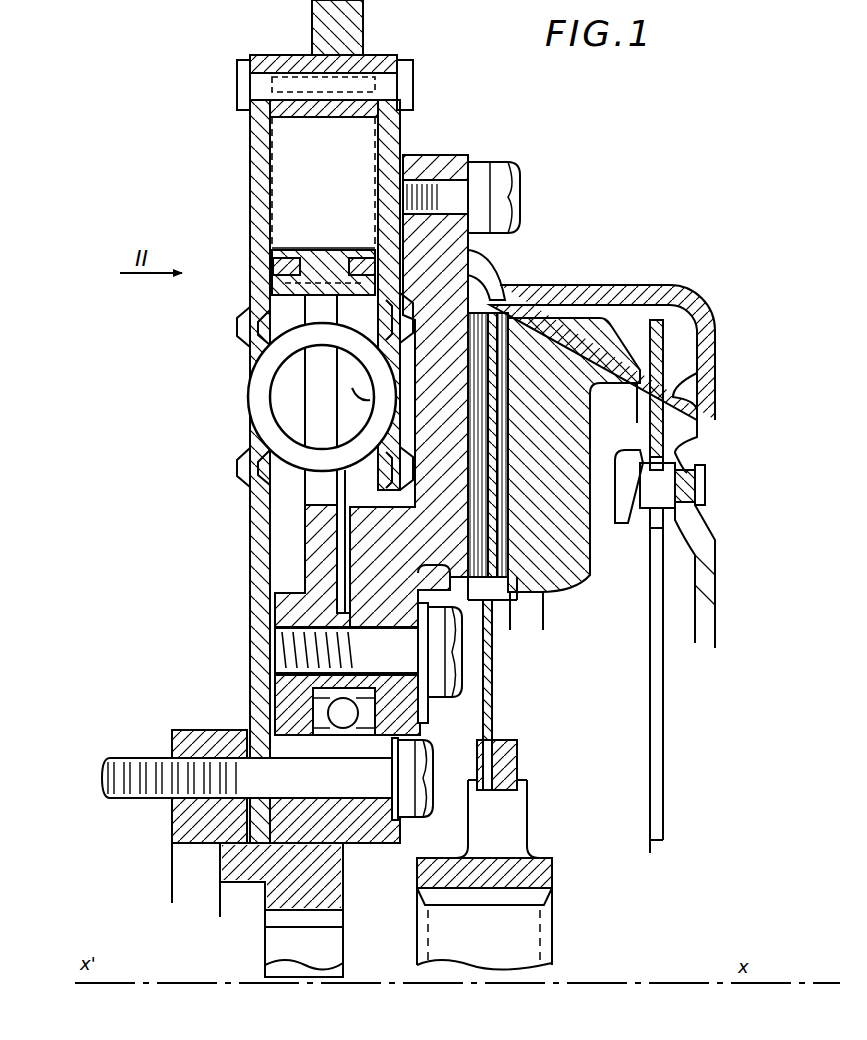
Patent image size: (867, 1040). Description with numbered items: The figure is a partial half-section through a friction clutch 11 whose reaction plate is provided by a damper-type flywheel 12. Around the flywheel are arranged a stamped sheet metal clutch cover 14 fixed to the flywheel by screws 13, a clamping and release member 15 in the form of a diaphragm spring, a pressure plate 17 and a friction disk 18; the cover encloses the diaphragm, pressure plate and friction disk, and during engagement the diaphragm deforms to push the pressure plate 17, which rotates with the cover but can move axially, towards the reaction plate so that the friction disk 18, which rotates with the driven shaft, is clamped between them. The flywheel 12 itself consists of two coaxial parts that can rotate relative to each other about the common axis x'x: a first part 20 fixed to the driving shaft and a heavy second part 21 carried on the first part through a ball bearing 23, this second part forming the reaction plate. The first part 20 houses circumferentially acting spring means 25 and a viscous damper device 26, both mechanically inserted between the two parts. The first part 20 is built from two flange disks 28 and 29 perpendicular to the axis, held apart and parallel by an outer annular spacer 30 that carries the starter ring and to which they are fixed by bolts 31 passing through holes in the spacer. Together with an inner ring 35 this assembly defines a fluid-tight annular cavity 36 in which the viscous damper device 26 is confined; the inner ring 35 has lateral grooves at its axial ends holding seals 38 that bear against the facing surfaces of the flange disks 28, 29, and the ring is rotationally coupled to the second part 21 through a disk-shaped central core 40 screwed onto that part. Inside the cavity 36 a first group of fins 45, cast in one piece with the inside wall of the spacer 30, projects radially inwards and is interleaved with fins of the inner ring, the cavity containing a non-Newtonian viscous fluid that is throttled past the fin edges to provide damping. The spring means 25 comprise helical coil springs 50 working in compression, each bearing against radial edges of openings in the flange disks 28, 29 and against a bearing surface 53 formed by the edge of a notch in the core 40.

The friction clutch 11 is at (627, 162).
The damper-type flywheel 12 is at (338, 565).
The screws 13 is at (518, 160).
The clutch cover 14 is at (632, 283).
The clamping and release member 15 is at (668, 725).
The pressure plate 17 is at (572, 303).
The friction disk 18 is at (500, 300).
The first part 20 is at (248, 490).
The second part 21 is at (476, 256).
The ball bearing 23 is at (343, 732).
The circumferentially acting spring means 25 is at (245, 418).
The viscous damper device 26 is at (305, 167).
The flange disk 28 is at (250, 132).
The flange disk 29 is at (403, 137).
The outer annular spacer 30 is at (297, 62).
The bolts 31 is at (357, 78).
The inner ring 35 is at (325, 255).
The fluid-tight annular cavity 36 is at (272, 147).
The seals 38 is at (288, 256).
The disk-shaped central core 40 is at (303, 537).
The first group of fins 45 is at (330, 194).
The helical coil springs 50 is at (258, 388).
The bearing surface 53 is at (310, 368).